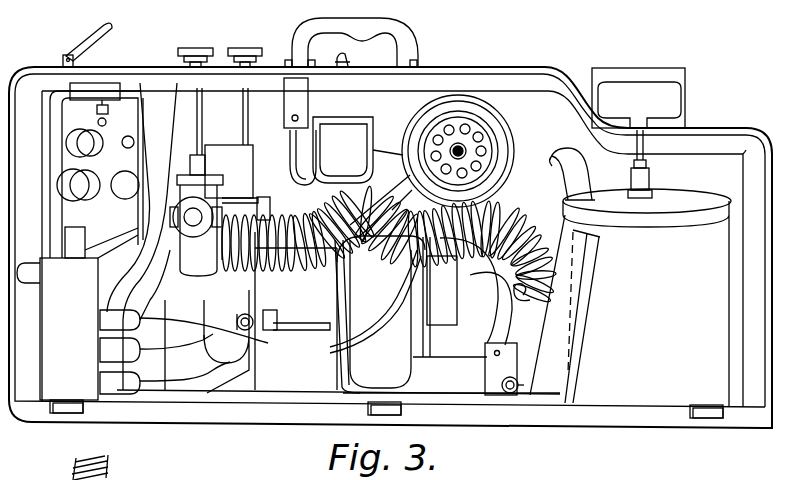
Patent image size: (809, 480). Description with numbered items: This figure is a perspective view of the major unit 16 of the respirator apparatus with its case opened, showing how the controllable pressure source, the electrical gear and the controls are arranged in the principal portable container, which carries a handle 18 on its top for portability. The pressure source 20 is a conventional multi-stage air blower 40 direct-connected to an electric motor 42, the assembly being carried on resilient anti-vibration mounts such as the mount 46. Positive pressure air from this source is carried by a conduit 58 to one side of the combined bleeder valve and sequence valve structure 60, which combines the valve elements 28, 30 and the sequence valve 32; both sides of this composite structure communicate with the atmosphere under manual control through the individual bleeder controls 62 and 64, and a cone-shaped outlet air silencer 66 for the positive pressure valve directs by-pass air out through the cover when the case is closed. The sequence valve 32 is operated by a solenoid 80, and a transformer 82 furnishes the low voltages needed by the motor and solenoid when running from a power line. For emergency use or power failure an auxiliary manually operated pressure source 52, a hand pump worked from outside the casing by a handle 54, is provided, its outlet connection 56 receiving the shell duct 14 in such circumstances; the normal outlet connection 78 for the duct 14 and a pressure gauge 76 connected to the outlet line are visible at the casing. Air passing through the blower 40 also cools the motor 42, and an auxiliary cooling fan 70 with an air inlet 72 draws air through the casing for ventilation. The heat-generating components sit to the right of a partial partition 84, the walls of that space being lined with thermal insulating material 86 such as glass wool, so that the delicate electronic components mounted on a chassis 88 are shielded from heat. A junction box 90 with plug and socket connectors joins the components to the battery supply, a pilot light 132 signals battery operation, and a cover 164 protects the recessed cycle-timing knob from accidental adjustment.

The duct 14 is at (100, 462).
The major unit 16 is at (525, 62).
The carrying handle 18 is at (403, 43).
The pressure source 20 is at (470, 365).
The bleeder valve element 28 is at (184, 340).
The bleeder valve element 30 is at (260, 216).
The sequence valve 32 is at (228, 341).
The multi-stage air blower 40 is at (311, 306).
The electric motor 42 is at (458, 348).
The resilient anti-vibration mount 46 is at (490, 367).
The auxiliary manually operated pressure source 52 is at (658, 335).
The handle 54 is at (670, 78).
The outlet connection 56 is at (583, 173).
The conduit 58 is at (508, 216).
The combined bleeder valve and sequence valve structure 60 is at (268, 187).
The bleeder valve control 62 is at (192, 50).
The bleeder valve control 64 is at (244, 50).
The outlet air silencer 66 is at (196, 225).
The auxiliary cooling fan 70 is at (500, 152).
The air inlet 72 is at (485, 479).
The pressure gauge 76 is at (197, 479).
The outlet connection 78 is at (56, 479).
The solenoid 80 is at (224, 150).
The transformer 82 is at (362, 154).
The partial partition 84 is at (138, 220).
The thermal insulating material 86 is at (170, 144).
The chassis 88 is at (75, 117).
The junction box 90 is at (80, 348).
The pilot light 132 is at (340, 59).
The cover 164 is at (92, 38).